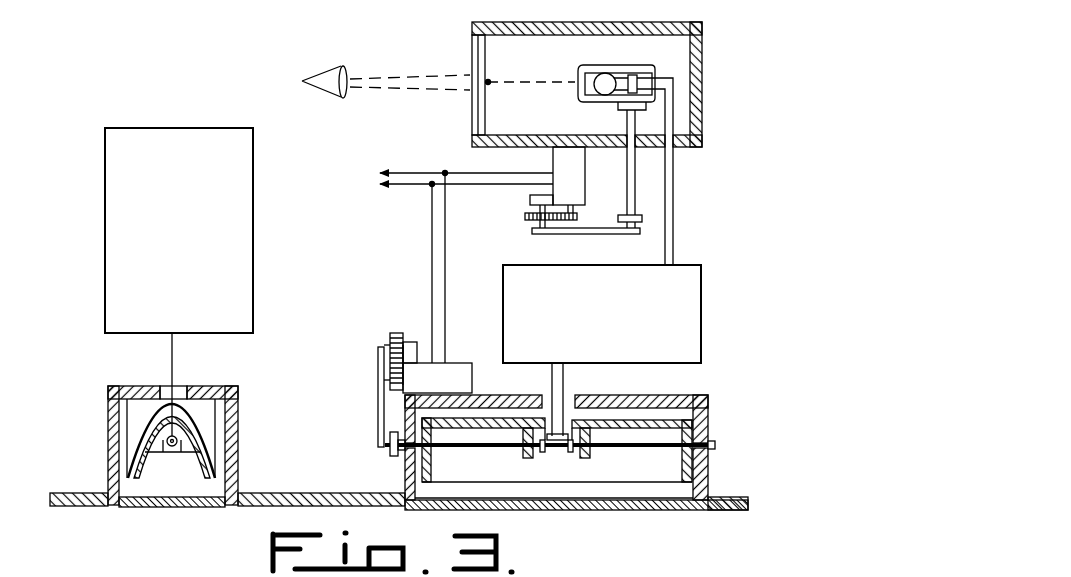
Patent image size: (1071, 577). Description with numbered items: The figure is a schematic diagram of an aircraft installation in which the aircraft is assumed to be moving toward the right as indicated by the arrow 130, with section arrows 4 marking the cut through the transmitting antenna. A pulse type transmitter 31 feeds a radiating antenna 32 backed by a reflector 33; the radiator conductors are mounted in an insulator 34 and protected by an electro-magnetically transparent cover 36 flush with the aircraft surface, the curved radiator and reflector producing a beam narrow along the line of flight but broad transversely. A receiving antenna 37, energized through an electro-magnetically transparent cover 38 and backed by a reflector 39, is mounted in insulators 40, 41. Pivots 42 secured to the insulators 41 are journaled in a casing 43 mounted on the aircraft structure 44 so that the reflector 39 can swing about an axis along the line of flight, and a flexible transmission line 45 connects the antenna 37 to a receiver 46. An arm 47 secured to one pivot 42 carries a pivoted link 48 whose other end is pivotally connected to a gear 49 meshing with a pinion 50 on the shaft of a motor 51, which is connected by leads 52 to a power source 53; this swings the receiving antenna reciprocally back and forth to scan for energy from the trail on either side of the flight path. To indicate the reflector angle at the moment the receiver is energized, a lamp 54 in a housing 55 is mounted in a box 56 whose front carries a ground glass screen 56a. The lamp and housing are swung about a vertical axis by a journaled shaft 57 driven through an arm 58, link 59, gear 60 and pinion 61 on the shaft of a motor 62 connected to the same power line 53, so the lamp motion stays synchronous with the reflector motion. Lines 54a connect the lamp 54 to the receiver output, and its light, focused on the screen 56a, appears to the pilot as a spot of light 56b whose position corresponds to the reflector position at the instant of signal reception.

The pulse type transmitter 31 is at (105, 258).
The section line of Fig. 4 is at (168, 362).
The arrow 130 is at (352, 329).
The radiating antenna 32 is at (177, 448).
The reflector 33 is at (210, 471).
The insulator 34 is at (160, 453).
The electro-magnetically transparent cover 36 is at (195, 508).
The receiving antenna 37 is at (478, 448).
The electro-magnetically transparent cover 38 is at (598, 510).
The reflector 39 is at (585, 482).
The insulator 40 is at (583, 455).
The insulator 41 is at (430, 450).
The pivot 42 is at (403, 452).
The casing 43 is at (708, 408).
The aircraft structure 44 is at (60, 493).
The flexible transmission line 45 is at (567, 381).
The receiver 46 is at (701, 322).
The arm 47 is at (393, 455).
The link 48 is at (378, 416).
The gear 49 is at (396, 333).
The pinion 50 is at (392, 386).
The motor 51 is at (462, 368).
The leads 52 is at (432, 258).
The power source 53 is at (373, 178).
The lamp 54 is at (607, 75).
The lines 54a is at (672, 228).
The housing 55 is at (598, 102).
The box 56 is at (702, 72).
The ground glass screen 56a is at (486, 70).
The spot of light 56b is at (488, 85).
The journaled shaft 57 is at (338, 68).
The arm 58 is at (640, 220).
The link 59 is at (595, 235).
The gear 60 is at (525, 217).
The pinion 61 is at (575, 214).
The motor 62 is at (580, 178).